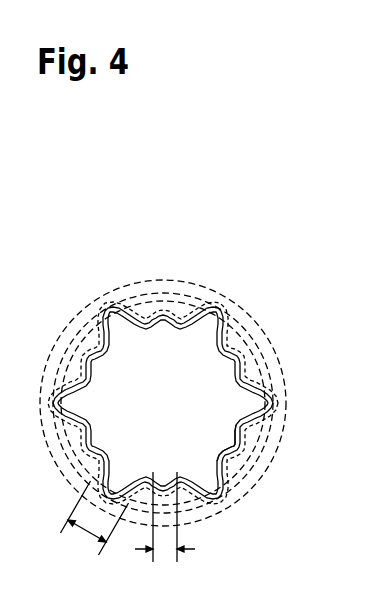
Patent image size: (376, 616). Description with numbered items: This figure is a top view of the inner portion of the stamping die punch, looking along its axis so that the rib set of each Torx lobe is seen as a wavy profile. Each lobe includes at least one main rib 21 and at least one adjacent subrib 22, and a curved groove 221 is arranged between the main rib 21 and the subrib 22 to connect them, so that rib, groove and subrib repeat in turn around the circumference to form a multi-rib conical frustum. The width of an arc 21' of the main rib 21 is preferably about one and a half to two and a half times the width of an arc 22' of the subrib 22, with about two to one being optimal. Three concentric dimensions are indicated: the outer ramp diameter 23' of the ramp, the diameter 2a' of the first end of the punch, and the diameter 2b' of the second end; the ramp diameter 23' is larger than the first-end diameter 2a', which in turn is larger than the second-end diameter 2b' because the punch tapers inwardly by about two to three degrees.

The main rib 21 is at (191, 403).
The subrib 22 is at (176, 403).
The curved groove 221 is at (223, 452).
The arc of the main rib 21' is at (95, 532).
The arc of the subrib 22' is at (185, 523).
The outer ramp diameter 23' is at (162, 321).
The diameter of the first end of the punch 2a' is at (163, 359).
The diameter of the second end of the punch 2b' is at (161, 341).